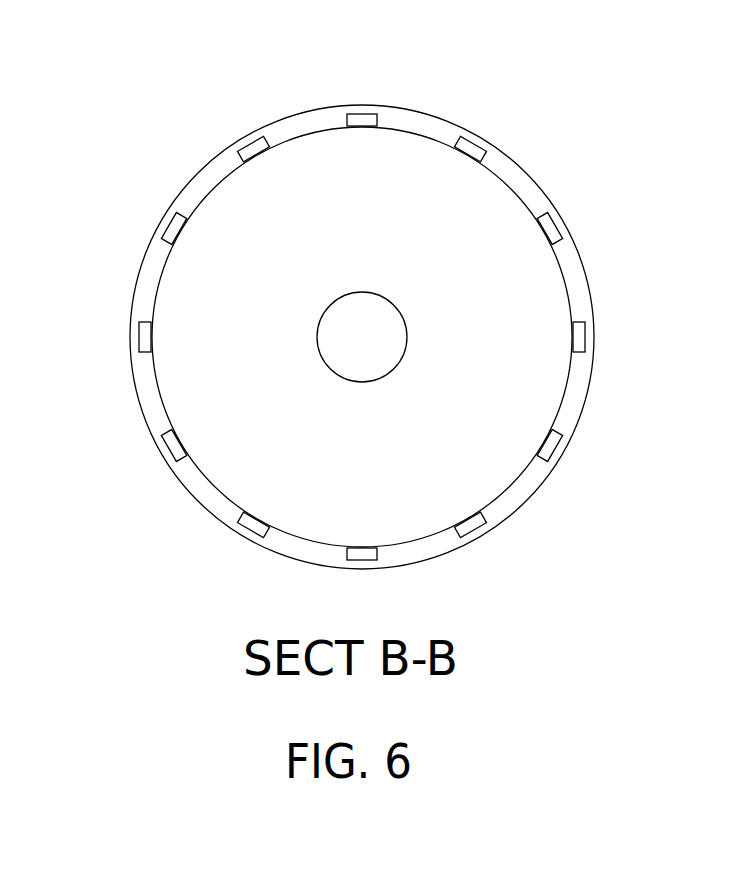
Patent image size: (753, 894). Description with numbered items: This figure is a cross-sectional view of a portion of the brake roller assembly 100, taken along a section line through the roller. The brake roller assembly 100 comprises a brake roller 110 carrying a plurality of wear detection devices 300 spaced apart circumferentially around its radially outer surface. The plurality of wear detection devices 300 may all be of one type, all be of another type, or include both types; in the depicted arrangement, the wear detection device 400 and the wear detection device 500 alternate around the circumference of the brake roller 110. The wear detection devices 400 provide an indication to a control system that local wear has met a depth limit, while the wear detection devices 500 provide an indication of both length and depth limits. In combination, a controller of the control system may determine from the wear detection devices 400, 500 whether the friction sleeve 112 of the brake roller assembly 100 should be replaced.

The brake roller assembly 100 is at (122, 98).
The brake roller 110 is at (230, 168).
The friction sleeve 112 is at (580, 387).
The wear detection devices 300 is at (358, 117).
The wear detection device 400 is at (365, 130).
The wear detection device 500 is at (258, 152).